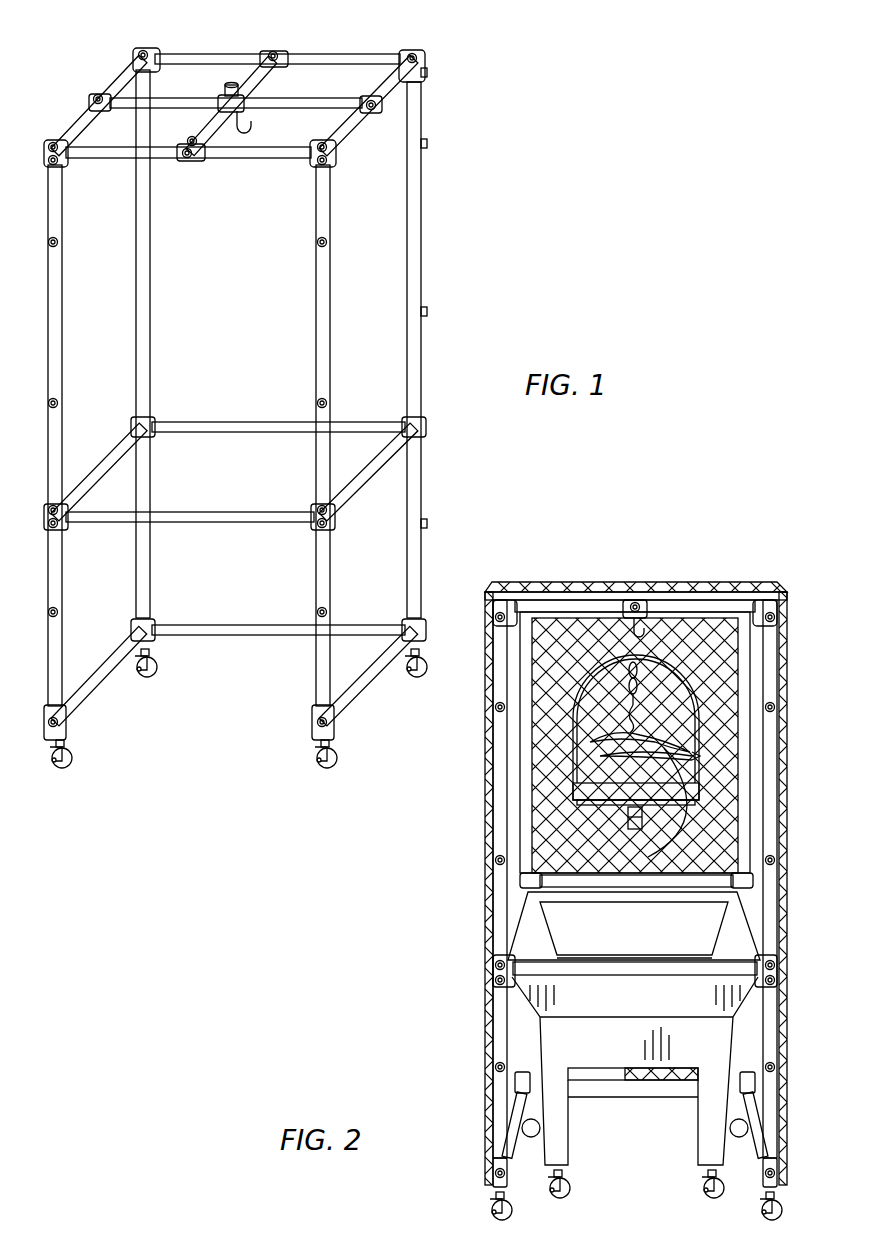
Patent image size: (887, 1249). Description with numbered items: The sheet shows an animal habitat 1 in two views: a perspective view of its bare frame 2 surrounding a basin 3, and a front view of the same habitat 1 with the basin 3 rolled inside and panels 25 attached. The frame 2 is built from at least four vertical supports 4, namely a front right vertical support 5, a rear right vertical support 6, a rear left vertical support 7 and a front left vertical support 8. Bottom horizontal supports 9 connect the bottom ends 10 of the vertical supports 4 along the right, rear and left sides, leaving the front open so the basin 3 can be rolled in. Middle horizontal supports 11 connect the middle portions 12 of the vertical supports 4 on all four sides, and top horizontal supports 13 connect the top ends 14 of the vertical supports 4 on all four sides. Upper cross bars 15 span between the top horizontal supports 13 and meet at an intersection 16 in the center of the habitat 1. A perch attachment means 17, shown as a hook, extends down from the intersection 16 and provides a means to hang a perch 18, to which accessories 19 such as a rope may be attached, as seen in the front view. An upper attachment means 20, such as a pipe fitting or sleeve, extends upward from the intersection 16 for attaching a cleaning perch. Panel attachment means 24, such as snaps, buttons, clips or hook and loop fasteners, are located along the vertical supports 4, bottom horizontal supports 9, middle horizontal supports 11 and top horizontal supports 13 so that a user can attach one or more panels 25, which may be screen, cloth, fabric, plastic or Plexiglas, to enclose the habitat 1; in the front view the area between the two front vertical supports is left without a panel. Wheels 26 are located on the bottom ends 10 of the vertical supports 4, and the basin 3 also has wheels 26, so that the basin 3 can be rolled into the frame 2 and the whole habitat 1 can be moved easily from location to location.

In FIG. 1, the habitat 1 is at (514, 170).
In FIG. 2, the habitat 1 is at (726, 538).
In FIG. 1, the frame 2 is at (448, 272).
In FIG. 2, the frame 2 is at (712, 600).
In FIG. 2, the basin 3 is at (642, 1009).
In FIG. 1, the vertical supports 4 is at (258, 388).
In FIG. 2, the vertical supports 4 is at (636, 879).
In FIG. 1, the front right vertical support 5 is at (332, 292).
In FIG. 2, the front right vertical support 5 is at (770, 1025).
In FIG. 1, the rear right vertical support 6 is at (424, 366).
In FIG. 1, the rear left vertical support 7 is at (152, 240).
In FIG. 2, the rear left vertical support 7 is at (500, 1025).
In FIG. 1, the front left vertical support 8 is at (64, 292).
In FIG. 1, the bottom horizontal supports 9 is at (250, 624).
In FIG. 2, the bottom horizontal supports 9 is at (516, 1122).
In FIG. 1, the bottom ends 10 is at (150, 624).
In FIG. 1, the middle horizontal supports 11 is at (250, 422).
In FIG. 2, the middle horizontal supports 11 is at (660, 958).
In FIG. 1, the middle portions 12 is at (150, 418).
In FIG. 1, the top horizontal supports 13 is at (126, 82).
In FIG. 2, the top horizontal supports 13 is at (665, 603).
In FIG. 1, the top ends 14 is at (134, 56).
In FIG. 1, the upper cross bars 15 is at (250, 84).
In FIG. 1, the intersection 16 is at (245, 104).
In FIG. 1, the perch attachment means 17 is at (254, 129).
In FIG. 2, the perch attachment means 17 is at (632, 626).
In FIG. 2, the perch 18 is at (692, 686).
In FIG. 2, the accessories 19 is at (662, 742).
In FIG. 1, the upper attachment means 20 is at (228, 84).
In FIG. 1, the panel attachment means 24 is at (190, 162).
In FIG. 2, the panel attachment means 24 is at (502, 612).
In FIG. 2, the panels 25 is at (728, 590).
In FIG. 1, the wheels 26 is at (150, 682).
In FIG. 2, the wheels 26 is at (560, 1198).